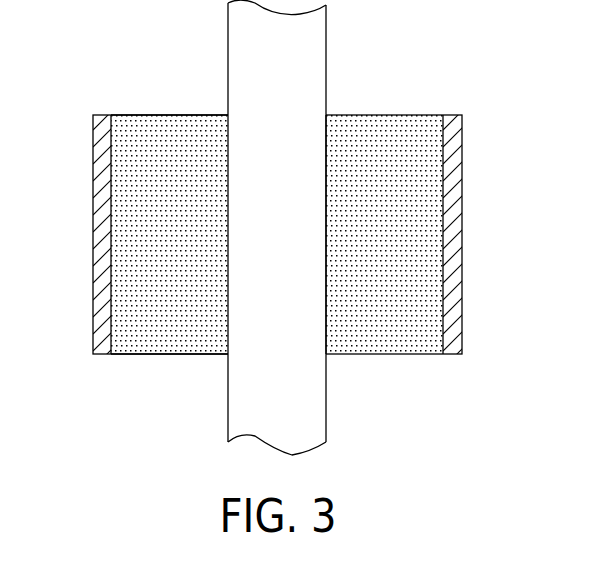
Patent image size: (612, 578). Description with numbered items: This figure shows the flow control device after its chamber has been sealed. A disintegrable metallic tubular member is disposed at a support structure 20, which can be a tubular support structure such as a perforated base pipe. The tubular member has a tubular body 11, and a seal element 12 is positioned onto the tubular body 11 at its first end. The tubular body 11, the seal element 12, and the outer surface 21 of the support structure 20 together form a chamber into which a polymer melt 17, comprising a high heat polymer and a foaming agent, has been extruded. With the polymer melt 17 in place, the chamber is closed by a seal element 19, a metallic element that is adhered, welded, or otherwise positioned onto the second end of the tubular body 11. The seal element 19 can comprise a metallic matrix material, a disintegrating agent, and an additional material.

The tubular body 11 is at (100, 203).
The seal element 12 is at (170, 354).
The polymer melt 17 is at (398, 244).
The seal element 19 is at (157, 113).
The support structure 20 is at (326, 83).
The outer surface 21 is at (326, 309).